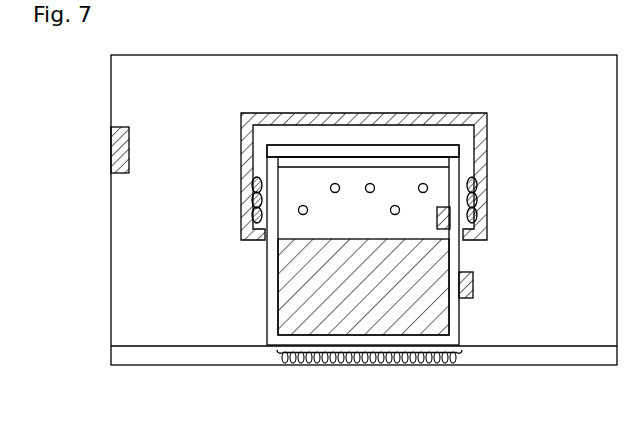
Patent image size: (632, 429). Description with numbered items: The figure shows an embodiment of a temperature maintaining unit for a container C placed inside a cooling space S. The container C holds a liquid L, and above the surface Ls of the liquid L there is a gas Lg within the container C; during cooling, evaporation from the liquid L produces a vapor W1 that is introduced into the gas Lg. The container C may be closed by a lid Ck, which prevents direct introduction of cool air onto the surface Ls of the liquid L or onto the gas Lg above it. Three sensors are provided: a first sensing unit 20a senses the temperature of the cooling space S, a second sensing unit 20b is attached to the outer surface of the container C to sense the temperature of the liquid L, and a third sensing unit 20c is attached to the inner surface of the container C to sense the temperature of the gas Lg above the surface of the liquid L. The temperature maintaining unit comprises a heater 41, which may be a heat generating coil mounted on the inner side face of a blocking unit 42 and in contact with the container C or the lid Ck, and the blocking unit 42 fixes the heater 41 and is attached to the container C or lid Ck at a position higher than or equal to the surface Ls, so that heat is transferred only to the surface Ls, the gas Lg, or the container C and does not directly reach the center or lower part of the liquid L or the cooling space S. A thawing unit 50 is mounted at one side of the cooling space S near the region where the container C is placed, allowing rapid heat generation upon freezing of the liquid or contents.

The first sensing unit 20a is at (111, 149).
The second sensing unit 20b is at (475, 286).
The third sensing unit 20c is at (450, 225).
The heater 41 is at (470, 180).
The blocking unit 42 is at (487, 113).
The thawing unit 50 is at (457, 364).
The container C is at (458, 327).
The lid Ck is at (447, 144).
The liquid L is at (327, 308).
The gas Lg is at (363, 195).
The surface of the liquid Ls is at (297, 236).
The cooling space S is at (364, 210).
The vapor W1 is at (396, 205).